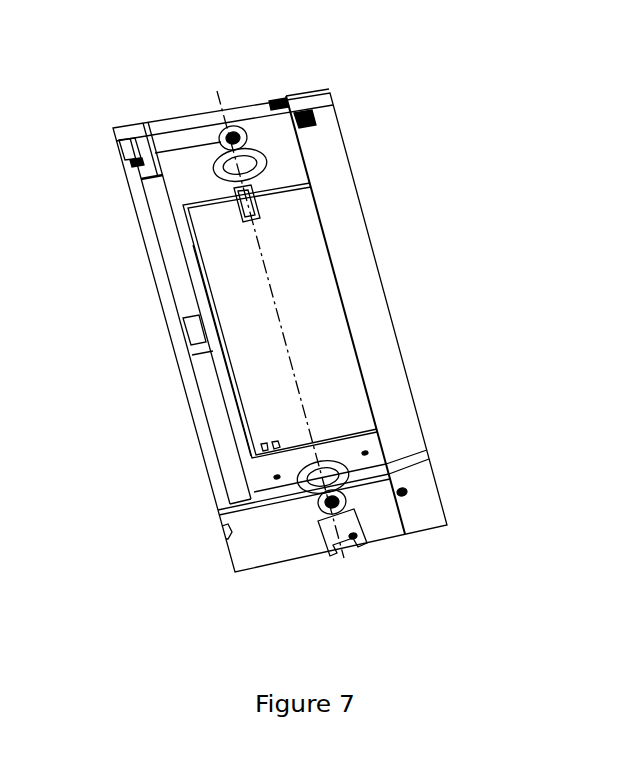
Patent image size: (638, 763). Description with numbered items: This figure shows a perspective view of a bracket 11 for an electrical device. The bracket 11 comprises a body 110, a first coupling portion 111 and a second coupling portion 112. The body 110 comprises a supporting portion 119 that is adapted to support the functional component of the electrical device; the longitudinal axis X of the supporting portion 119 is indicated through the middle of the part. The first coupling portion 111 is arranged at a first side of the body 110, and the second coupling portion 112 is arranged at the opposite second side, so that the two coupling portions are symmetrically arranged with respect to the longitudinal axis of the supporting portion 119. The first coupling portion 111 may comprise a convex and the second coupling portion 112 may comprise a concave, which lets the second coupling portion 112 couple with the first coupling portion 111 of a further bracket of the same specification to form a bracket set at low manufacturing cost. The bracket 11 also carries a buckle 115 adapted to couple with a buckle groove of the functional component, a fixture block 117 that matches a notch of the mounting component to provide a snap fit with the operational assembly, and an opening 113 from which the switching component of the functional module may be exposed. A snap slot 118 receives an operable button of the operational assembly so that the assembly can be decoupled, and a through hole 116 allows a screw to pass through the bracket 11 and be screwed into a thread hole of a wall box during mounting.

The bracket 11 is at (166, 68).
The body 110 is at (332, 152).
The first coupling portion 111 is at (403, 490).
The second coupling portion 112 is at (233, 528).
The opening 113 is at (320, 377).
The buckle 115 is at (228, 214).
The through hole 116 is at (326, 478).
The fixture block 117 is at (272, 92).
The snap slot 118 is at (360, 537).
The supporting portion 119 is at (352, 278).